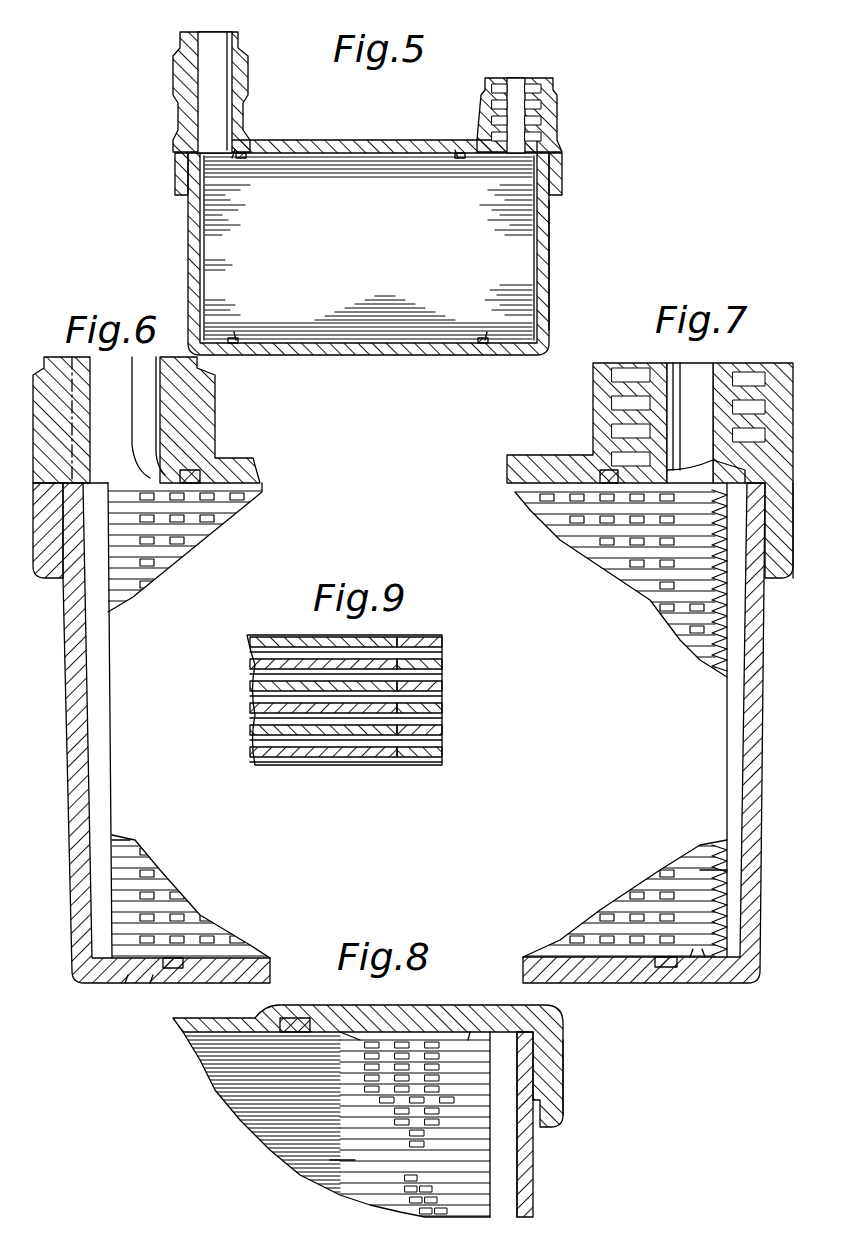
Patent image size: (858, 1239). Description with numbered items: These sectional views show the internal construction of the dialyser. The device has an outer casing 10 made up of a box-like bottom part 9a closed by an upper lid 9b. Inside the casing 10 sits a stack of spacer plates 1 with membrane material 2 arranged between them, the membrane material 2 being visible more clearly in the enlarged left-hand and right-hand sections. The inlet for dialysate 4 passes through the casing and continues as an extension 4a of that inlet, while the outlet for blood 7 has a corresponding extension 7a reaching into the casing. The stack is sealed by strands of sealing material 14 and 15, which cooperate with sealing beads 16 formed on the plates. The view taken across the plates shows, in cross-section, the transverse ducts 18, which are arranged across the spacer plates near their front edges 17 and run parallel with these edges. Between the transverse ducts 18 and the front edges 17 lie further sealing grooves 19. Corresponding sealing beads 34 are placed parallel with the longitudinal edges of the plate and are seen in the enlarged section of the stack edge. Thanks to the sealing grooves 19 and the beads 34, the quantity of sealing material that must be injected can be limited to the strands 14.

In FIG. 5, the spacer plates 1 is at (332, 340).
In FIG. 6, the spacer plates 1 is at (125, 876).
In FIG. 7, the spacer plates 1 is at (700, 916).
In FIG. 8, the spacer plates 1 is at (350, 1150).
In FIG. 6, the membrane material 2 is at (120, 840).
In FIG. 7, the membrane material 2 is at (712, 874).
In FIG. 8, the membrane material 2 is at (355, 1160).
In FIG. 5, the inlet for dialysate 4 is at (248, 38).
In FIG. 6, the inlet for dialysate 4 is at (232, 420).
In FIG. 5, the extension of the inlet 4a is at (200, 240).
In FIG. 6, the extension of the inlet 4a is at (75, 690).
In FIG. 5, the outlet for blood 7 is at (569, 115).
In FIG. 7, the outlet for blood 7 is at (768, 318).
In FIG. 5, the extension of the blood outlet 7a is at (535, 241).
In FIG. 7, the extension of the blood outlet 7a is at (738, 663).
In FIG. 5, the box-like bottom part 9a is at (549, 278).
In FIG. 8, the box-like bottom part 9a is at (533, 1192).
In FIG. 5, the upper lid 9b is at (336, 140).
In FIG. 8, the upper lid 9b is at (398, 1005).
In FIG. 5, the outer casing 10 is at (568, 212).
In FIG. 5, the strands of sealing material 14 is at (242, 153).
In FIG. 6, the strands of sealing material 14 is at (192, 484).
In FIG. 7, the strands of sealing material 14 is at (600, 470).
In FIG. 8, the strands of sealing material 14 is at (322, 1018).
In FIG. 5, the strands of sealing material 15 is at (178, 154).
In FIG. 7, the strands of sealing material 15 is at (781, 578).
In FIG. 8, the strands of sealing material 15 is at (566, 1032).
In FIG. 5, the sealing beads 16 is at (240, 158).
In FIG. 6, the sealing beads 16 is at (145, 488).
In FIG. 7, the sealing beads 16 is at (648, 968).
In FIG. 8, the sealing beads 16 is at (470, 1032).
In FIG. 8, the front edges 17 is at (493, 1125).
In FIG. 8, the transverse ducts 18 is at (415, 1200).
In FIG. 8, the sealing grooves 19 is at (480, 1150).
In FIG. 9, the sealing beads 34 is at (430, 706).